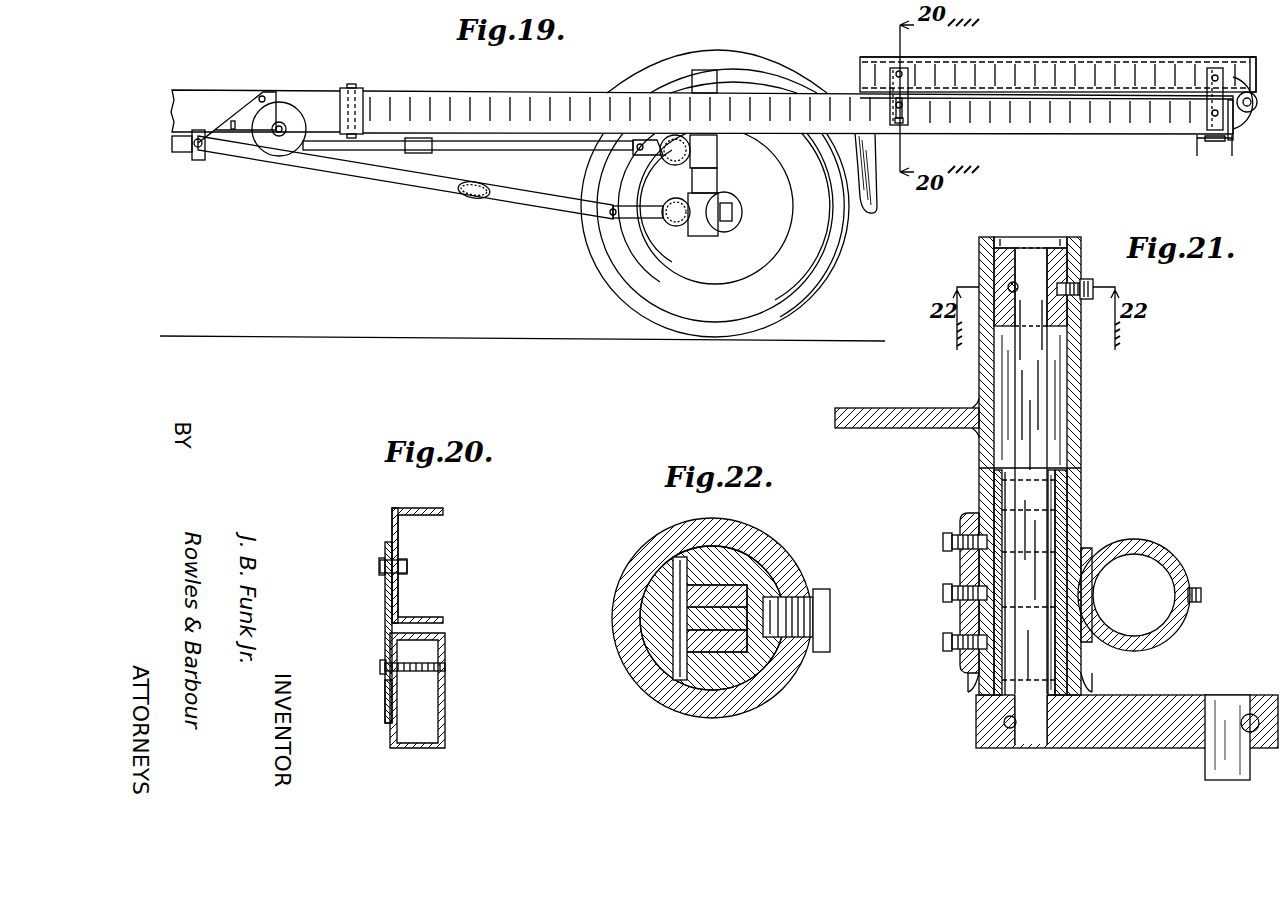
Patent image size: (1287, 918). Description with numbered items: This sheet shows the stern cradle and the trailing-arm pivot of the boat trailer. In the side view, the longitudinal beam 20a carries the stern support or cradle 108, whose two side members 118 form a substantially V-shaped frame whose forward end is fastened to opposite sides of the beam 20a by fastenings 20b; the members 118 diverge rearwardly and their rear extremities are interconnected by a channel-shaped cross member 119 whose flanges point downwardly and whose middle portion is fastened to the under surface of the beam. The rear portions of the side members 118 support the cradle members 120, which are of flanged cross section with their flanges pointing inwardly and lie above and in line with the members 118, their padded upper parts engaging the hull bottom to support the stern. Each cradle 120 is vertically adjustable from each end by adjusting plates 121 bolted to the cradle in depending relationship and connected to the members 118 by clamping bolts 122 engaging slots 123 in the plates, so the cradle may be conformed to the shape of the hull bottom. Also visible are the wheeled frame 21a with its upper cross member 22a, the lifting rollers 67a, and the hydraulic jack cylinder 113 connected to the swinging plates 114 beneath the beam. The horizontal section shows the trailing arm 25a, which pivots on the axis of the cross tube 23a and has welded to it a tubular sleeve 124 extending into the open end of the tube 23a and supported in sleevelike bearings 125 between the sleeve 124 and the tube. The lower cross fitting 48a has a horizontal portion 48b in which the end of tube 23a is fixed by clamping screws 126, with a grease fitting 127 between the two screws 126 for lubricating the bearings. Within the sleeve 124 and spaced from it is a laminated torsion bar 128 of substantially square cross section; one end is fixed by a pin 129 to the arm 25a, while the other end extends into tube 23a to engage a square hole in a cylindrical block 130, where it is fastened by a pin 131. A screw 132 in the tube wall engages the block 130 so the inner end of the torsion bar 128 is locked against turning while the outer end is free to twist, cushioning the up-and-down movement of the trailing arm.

In FIG. 19, the longitudinal beam 20a is at (206, 100).
In FIG. 19, the fastenings 20b is at (345, 88).
In FIG. 19, the wheeled frame 21a is at (716, 188).
In FIG. 19, the upper cross member 22a is at (650, 158).
In FIG. 21, the cross tube 23a is at (1075, 458).
In FIG. 22, the cross tube 23a is at (790, 567).
In FIG. 21, the trailing arm 25a is at (1162, 712).
In FIG. 21, the lower cross fitting 48a is at (1172, 565).
In FIG. 21, the horizontal portion 48b is at (965, 520).
In FIG. 19, the lifting rollers 67a is at (279, 150).
In FIG. 19, the stern support or cradle 108 is at (1107, 55).
In FIG. 20, the stern support or cradle 108 is at (386, 528).
In FIG. 19, the cylinder 113 is at (183, 152).
In FIG. 19, the swinging plates 114 is at (252, 108).
In FIG. 19, the side members 118 is at (543, 98).
In FIG. 20, the side members 118 is at (446, 648).
In FIG. 19, the cross member 119 is at (1196, 146).
In FIG. 19, the cradle members 120 is at (1152, 66).
In FIG. 20, the cradle members 120 is at (432, 508).
In FIG. 19, the adjusting plates 121 is at (895, 76).
In FIG. 20, the adjusting plates 121 is at (385, 608).
In FIG. 19, the clamping bolts 122 is at (897, 105).
In FIG. 20, the clamping bolts 122 is at (425, 672).
In FIG. 19, the slots 123 is at (903, 119).
In FIG. 20, the slots 123 is at (386, 692).
In FIG. 21, the tubular sleeve 124 is at (1056, 530).
In FIG. 21, the sleevelike bearings 125 is at (1072, 492).
In FIG. 21, the clamping screws 126 is at (943, 543).
In FIG. 21, the grease fitting 127 is at (943, 593).
In FIG. 21, the laminated torsion bar 128 is at (1035, 410).
In FIG. 22, the laminated torsion bar 128 is at (742, 637).
In FIG. 21, the pin 129 is at (1003, 722).
In FIG. 21, the cylindrical block 130 is at (1003, 262).
In FIG. 22, the cylindrical block 130 is at (748, 562).
In FIG. 21, the pin 131 is at (1017, 291).
In FIG. 22, the pin 131 is at (675, 566).
In FIG. 21, the screw 132 is at (1090, 280).
In FIG. 22, the screw 132 is at (822, 642).